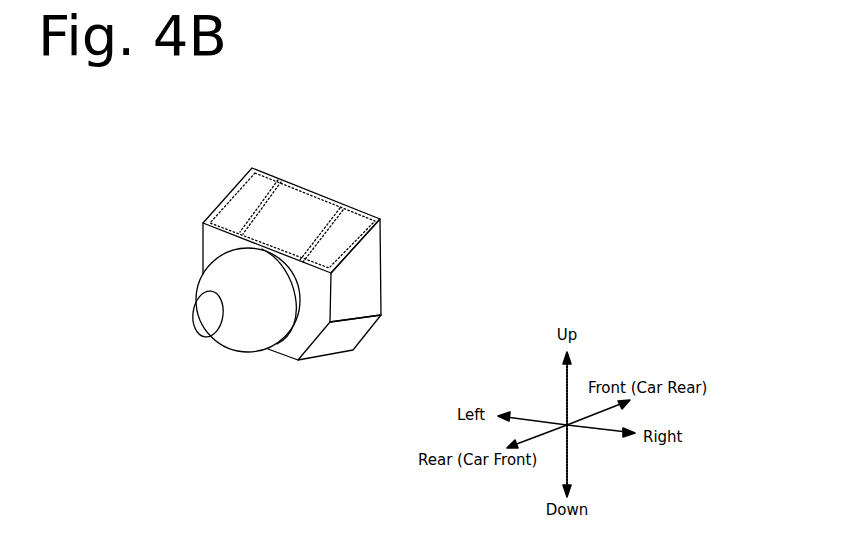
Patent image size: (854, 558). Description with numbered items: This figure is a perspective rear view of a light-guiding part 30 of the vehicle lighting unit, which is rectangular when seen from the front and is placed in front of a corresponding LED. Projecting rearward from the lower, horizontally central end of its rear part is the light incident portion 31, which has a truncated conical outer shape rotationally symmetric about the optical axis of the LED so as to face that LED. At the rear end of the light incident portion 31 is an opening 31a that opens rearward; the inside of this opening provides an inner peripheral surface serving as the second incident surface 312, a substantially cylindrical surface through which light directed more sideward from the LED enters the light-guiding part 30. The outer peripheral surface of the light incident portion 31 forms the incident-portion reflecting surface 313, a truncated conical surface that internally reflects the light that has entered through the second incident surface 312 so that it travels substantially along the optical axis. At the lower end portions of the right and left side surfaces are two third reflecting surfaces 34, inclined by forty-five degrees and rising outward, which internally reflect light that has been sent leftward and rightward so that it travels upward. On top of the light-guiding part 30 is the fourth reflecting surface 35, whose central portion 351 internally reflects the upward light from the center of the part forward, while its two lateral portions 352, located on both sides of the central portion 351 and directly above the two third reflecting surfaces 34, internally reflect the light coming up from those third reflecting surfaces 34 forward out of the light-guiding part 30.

The light-guiding part 30 is at (412, 208).
The light incident portion 31 is at (242, 357).
The opening 31a is at (217, 323).
The second incident surface 312 is at (207, 312).
The incident-portion reflecting surface 313 is at (262, 338).
The third reflecting surface 34 is at (352, 343).
The fourth reflecting surface 35 is at (425, 113).
The central portion 351 is at (307, 202).
The lateral portions 352 is at (262, 187).